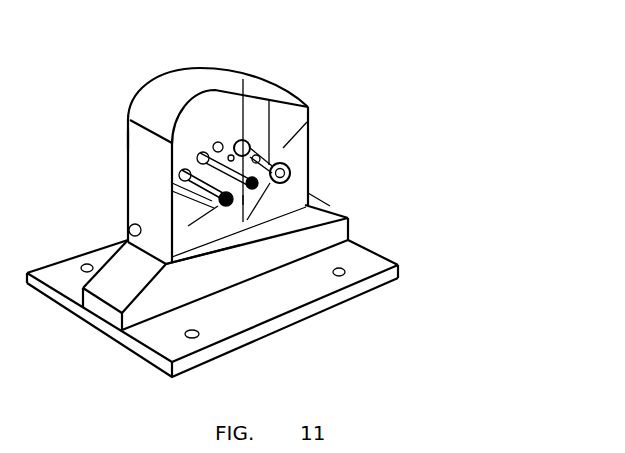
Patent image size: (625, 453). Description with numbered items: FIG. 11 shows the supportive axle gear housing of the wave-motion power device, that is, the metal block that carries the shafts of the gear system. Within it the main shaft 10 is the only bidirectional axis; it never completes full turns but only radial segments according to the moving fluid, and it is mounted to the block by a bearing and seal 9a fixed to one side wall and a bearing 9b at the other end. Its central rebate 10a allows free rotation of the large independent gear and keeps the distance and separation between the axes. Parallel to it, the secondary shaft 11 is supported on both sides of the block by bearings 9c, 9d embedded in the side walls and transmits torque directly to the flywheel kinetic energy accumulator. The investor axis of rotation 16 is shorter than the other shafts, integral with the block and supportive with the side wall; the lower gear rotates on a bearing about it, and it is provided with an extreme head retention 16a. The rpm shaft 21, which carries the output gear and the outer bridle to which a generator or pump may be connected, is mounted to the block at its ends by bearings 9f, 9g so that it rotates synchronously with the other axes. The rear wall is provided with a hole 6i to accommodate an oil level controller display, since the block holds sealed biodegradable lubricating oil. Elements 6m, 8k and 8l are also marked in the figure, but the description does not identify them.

The investor axis of rotation 16 is at (215, 143).
The extreme head retention 16a is at (237, 142).
The bearing 9c is at (213, 152).
The bearing and seal 9a is at (246, 141).
The central rebate 10a is at (262, 153).
The bearing 9b is at (310, 106).
The main shaft 10 is at (291, 170).
The secondary shaft 11 is at (128, 140).
The bearing 9f is at (199, 166).
The bearing 9g is at (172, 192).
The hole 6i is at (129, 228).
The rpm shaft 21 is at (208, 256).
The bearing 9d is at (243, 205).
The pad edge 6m is at (334, 203).
The pad step 8k is at (350, 240).
The mounting hole 8l is at (348, 267).